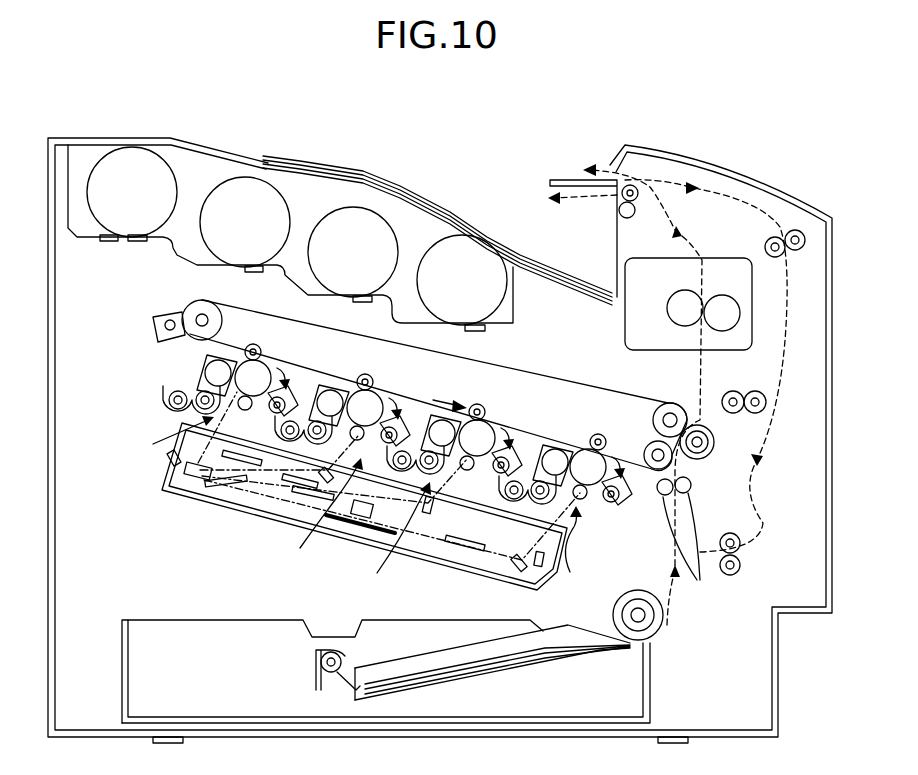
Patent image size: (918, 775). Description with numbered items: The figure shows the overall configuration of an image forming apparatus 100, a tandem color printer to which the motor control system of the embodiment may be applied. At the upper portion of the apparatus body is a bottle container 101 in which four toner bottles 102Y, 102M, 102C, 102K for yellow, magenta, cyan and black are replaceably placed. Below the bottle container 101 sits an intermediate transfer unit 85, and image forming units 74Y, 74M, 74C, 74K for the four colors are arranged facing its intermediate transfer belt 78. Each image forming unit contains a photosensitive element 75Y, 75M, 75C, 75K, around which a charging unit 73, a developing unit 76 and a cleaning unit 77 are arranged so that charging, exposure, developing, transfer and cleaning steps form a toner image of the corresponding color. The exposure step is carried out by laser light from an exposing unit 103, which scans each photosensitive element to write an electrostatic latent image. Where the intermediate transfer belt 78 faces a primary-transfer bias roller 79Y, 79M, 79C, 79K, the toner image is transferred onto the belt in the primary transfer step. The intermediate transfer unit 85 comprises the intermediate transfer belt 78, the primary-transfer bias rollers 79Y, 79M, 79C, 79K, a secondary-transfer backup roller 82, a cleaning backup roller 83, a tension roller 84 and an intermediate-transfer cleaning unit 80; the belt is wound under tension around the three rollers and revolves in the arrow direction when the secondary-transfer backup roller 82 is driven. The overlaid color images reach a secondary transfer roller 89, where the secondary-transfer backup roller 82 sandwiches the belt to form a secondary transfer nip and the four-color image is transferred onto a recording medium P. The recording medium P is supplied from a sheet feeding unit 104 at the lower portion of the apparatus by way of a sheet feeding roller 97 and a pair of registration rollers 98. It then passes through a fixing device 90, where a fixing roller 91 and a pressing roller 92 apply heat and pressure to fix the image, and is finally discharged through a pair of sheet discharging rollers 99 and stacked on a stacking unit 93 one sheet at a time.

The image forming apparatus 100 is at (296, 150).
The stacking unit 93 is at (438, 195).
The pair of sheet discharging rollers 99 is at (622, 202).
The fixing device 90 is at (708, 258).
The fixing roller 91 is at (676, 296).
The pressing roller 92 is at (740, 313).
The toner bottle 102Y is at (126, 222).
The toner bottle 102M is at (215, 204).
The toner bottle 102C is at (330, 232).
The toner bottle 102K is at (506, 290).
The bottle container 101 is at (173, 250).
The intermediate transfer unit 85 is at (560, 372).
The intermediate-transfer cleaning unit 80 is at (150, 326).
The cleaning backup roller 83 is at (203, 332).
The intermediate transfer belt 78 is at (334, 338).
The primary-transfer bias roller 79Y is at (262, 350).
The primary-transfer bias roller 79M is at (378, 382).
The primary-transfer bias roller 79C is at (486, 408).
The primary-transfer bias roller 79K is at (598, 433).
The photosensitive element 75Y is at (257, 394).
The photosensitive element 75M is at (370, 388).
The photosensitive element 75C is at (482, 458).
The photosensitive element 75K is at (572, 440).
The image forming unit 74Y is at (163, 436).
The image forming unit 74M is at (319, 514).
The image forming unit 74C is at (392, 538).
The image forming unit 74K is at (581, 550).
The tension roller 84 is at (655, 420).
The secondary-transfer backup roller 82 is at (688, 426).
The cleaning unit 77 is at (604, 496).
The secondary transfer roller 89 is at (700, 460).
The charging unit 73 is at (592, 500).
The developing unit 76 is at (518, 565).
The exposing unit 103 is at (212, 504).
The sheet feeding unit 104 is at (360, 656).
The recording medium P is at (428, 650).
The pair of registration rollers 98 is at (697, 550).
The sheet feeding roller 97 is at (655, 630).